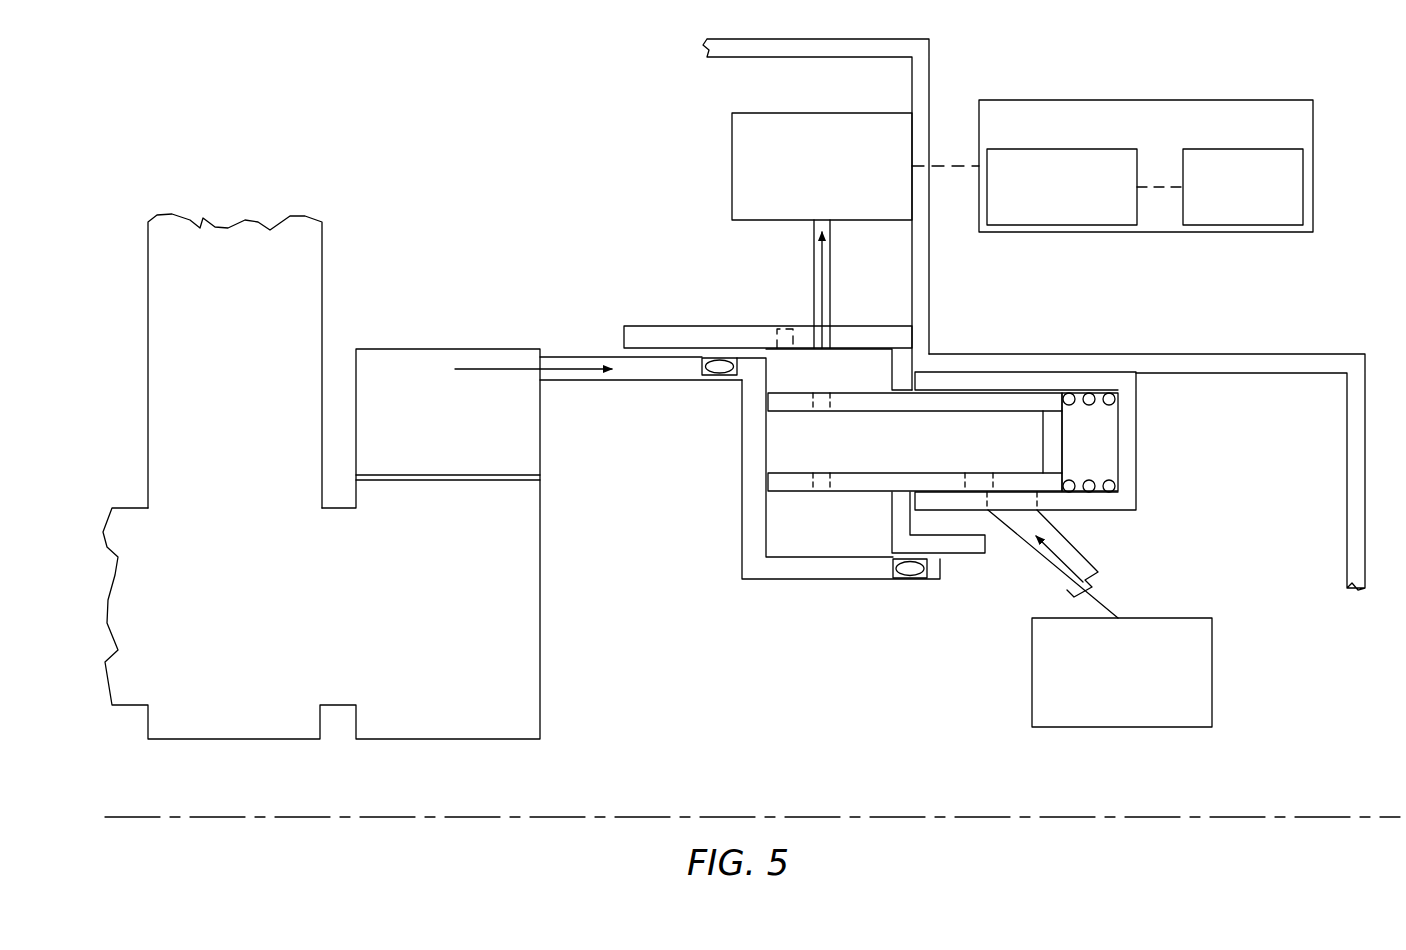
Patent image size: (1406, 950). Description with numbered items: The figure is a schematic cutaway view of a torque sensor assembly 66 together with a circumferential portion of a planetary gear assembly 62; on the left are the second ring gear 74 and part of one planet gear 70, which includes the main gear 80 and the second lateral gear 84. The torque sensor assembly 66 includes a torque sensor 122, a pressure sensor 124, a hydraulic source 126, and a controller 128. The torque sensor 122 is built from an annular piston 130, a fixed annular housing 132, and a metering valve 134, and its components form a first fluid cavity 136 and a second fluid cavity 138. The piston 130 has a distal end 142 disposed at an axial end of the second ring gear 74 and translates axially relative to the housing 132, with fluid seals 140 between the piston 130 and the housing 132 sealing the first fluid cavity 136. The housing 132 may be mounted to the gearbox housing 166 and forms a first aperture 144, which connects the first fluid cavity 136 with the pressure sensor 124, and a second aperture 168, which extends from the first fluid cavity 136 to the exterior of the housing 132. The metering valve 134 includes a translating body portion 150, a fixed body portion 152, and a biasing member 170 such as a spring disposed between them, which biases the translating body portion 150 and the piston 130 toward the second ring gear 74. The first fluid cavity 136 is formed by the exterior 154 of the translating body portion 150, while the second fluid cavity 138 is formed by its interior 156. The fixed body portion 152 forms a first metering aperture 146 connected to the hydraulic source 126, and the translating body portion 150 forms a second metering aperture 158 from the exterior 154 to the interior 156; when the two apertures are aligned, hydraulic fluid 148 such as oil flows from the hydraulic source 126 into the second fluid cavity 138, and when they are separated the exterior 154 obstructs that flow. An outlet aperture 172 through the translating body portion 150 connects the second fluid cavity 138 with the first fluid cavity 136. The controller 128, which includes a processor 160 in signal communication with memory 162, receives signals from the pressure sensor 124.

The planetary gear assembly 62 is at (206, 147).
The planet gear 70 is at (117, 378).
The main gear 80 is at (178, 300).
The second lateral gear 84 is at (517, 600).
The second ring gear 74 is at (403, 372).
The piston 130 is at (638, 376).
The distal end 142 is at (538, 359).
The housing 132 is at (640, 337).
The fluid seal 140 is at (717, 360).
The first fluid cavity 136 is at (884, 370).
The torque sensor 122 is at (730, 572).
The second aperture 168 is at (777, 326).
The first aperture 144 is at (832, 343).
The pressure sensor 124 is at (800, 212).
The gearbox housing 166 is at (920, 73).
The controller 128 is at (1112, 127).
The processor 160 is at (1042, 217).
The memory 162 is at (1223, 217).
The exterior 154 is at (793, 393).
The interior 156 is at (797, 473).
The first metering aperture 146 is at (993, 485).
The outlet aperture 172 is at (827, 413).
The second fluid cavity 138 is at (872, 455).
The translating body portion 150 is at (1023, 402).
The biasing member 170 is at (1116, 397).
The fixed body portion 152 is at (1085, 382).
The metering valve 134 is at (1148, 482).
The second metering aperture 158 is at (1043, 497).
The torque sensor assembly 66 is at (1325, 334).
The hydraulic fluid 148 is at (1103, 600).
The hydraulic source 126 is at (1102, 718).